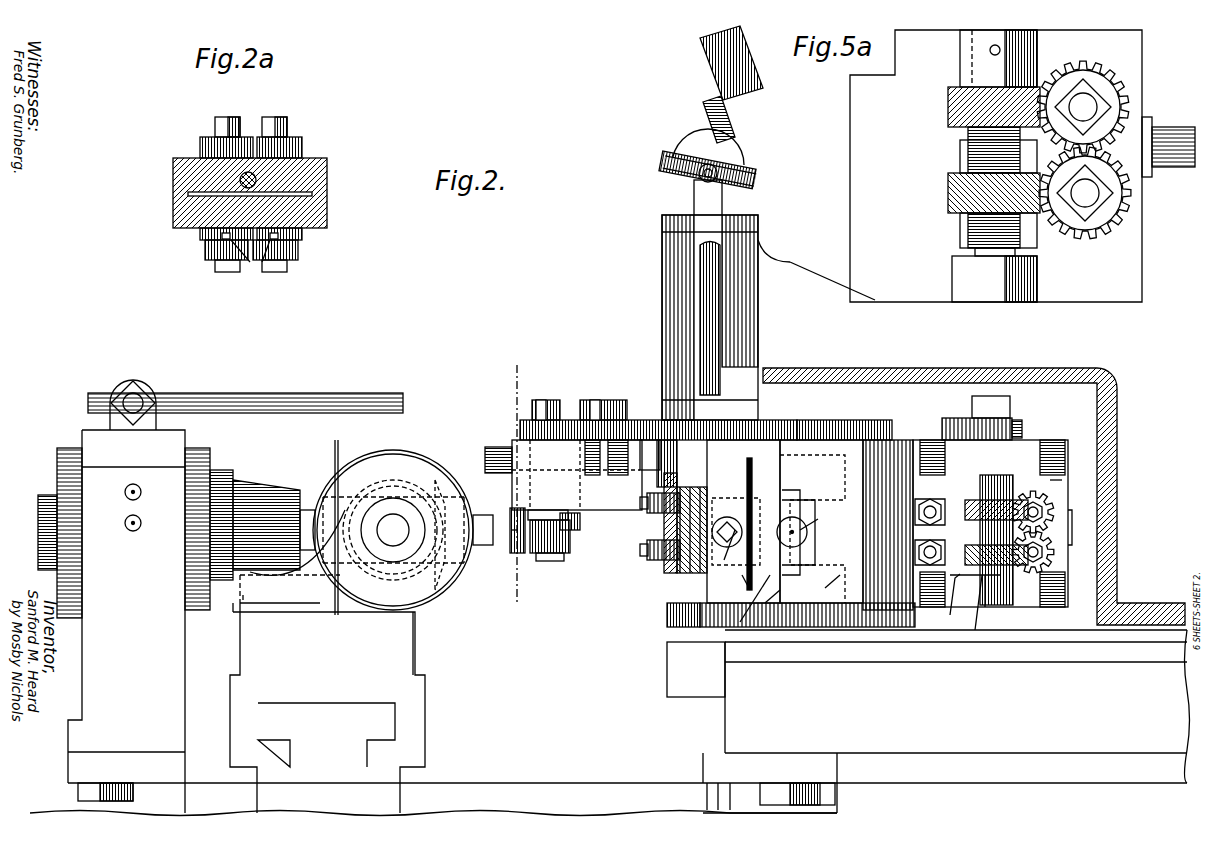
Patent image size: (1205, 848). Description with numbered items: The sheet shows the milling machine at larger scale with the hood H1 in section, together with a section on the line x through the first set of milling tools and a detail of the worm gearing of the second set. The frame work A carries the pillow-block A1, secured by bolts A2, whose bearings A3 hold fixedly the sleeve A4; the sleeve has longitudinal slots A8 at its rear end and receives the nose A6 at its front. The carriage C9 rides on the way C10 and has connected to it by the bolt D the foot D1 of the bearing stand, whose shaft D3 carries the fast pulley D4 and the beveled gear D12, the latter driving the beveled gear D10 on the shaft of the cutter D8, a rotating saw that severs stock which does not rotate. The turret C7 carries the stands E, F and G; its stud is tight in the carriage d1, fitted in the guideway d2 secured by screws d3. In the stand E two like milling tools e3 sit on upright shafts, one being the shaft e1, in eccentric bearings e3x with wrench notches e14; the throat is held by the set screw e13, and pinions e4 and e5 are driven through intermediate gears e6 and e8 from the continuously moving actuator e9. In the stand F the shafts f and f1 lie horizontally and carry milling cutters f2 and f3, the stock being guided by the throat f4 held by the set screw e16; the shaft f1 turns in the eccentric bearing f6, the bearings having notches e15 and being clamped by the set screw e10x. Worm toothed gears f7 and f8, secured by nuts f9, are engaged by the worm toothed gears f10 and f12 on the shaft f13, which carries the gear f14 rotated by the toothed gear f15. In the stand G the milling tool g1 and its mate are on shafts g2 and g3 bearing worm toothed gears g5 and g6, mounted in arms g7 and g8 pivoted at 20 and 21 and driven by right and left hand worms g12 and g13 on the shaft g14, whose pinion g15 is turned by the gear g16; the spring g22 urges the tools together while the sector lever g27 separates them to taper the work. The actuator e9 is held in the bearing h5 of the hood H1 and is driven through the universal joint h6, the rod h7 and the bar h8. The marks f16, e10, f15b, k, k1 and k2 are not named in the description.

In FIG. 2A, the stand E is at (322, 205).
In FIG. 2, the stand E is at (590, 510).
In FIG. 2A, the shaft f16 is at (256, 178).
In FIG. 2, the shaft f16 is at (492, 440).
In FIG. 2A, the pinion e5 is at (200, 146).
In FIG. 2A, the pinion e4 is at (302, 146).
In FIG. 2, the pinion e4 is at (532, 410).
In FIG. 2A, the eccentric bearings e3x is at (200, 236).
In FIG. 2, the eccentric bearings e3x is at (568, 515).
In FIG. 2A, the milling tools e3 is at (205, 252).
In FIG. 2, the milling tools e3 is at (570, 535).
In FIG. 2A, the notches e14 is at (245, 265).
In FIG. 2, the notches e14 is at (575, 495).
In FIG. 5A, the stand F is at (850, 157).
In FIG. 2, the stand F is at (876, 525).
In FIG. 5A, the worm toothed gear f10 is at (948, 105).
In FIG. 5A, the worm toothed gear f12 is at (948, 193).
In FIG. 2, the worm toothed gear f12 is at (740, 572).
In FIG. 5A, the worm toothed gear f7 is at (1108, 75).
In FIG. 2, the worm toothed gear f7 is at (677, 465).
In FIG. 5A, the shaft f1 is at (1088, 102).
In FIG. 2, the shaft f1 is at (752, 480).
In FIG. 5A, the nuts f9 is at (1097, 107).
In FIG. 2, the nuts f9 is at (655, 513).
In FIG. 5A, the worm toothed gear f8 is at (1118, 223).
In FIG. 2, the worm toothed gear f8 is at (660, 562).
In FIG. 5A, the shaft f is at (1092, 198).
In FIG. 2, the shaft f is at (676, 540).
In FIG. 5A, the set screw e10x is at (1168, 137).
In FIG. 2, the frame work A is at (185, 800).
In FIG. 2, the pillow-block A1 is at (123, 634).
In FIG. 2, the bolts A2 is at (130, 783).
In FIG. 2, the longitudinal slots A8 is at (60, 448).
In FIG. 2, the sleeve A4 is at (34, 532).
In FIG. 2, the bearings A3 is at (210, 452).
In FIG. 2, the nose A6 is at (285, 492).
In FIG. 2, the handle k is at (245, 393).
In FIG. 2, the pin k1 is at (128, 400).
In FIG. 2, the bracket k2 is at (143, 395).
In FIG. 2, the bolt D is at (270, 610).
In FIG. 2, the foot D1 is at (240, 615).
In FIG. 2, the way C10 is at (350, 738).
In FIG. 2, the carriage C9 is at (413, 640).
In FIG. 2, the shaft D3 is at (400, 540).
In FIG. 2, the beveled gear D10 is at (405, 522).
In FIG. 2, the cutter D8 is at (338, 455).
In FIG. 2, the fast pulley D4 is at (445, 560).
In FIG. 2, the beveled gear D12 is at (472, 560).
In FIG. 2, the section line x is at (514, 487).
In FIG. 2, the intermediate gear e8 is at (620, 428).
In FIG. 2, the intermediate gear e6 is at (600, 400).
In FIG. 2, the set screw e13 is at (540, 470).
In FIG. 2, the shaft e1 is at (520, 525).
In FIG. 2, the gear f14 is at (650, 455).
In FIG. 2, the shaft e10 is at (725, 517).
In FIG. 2, the notches e15 is at (726, 529).
In FIG. 2, the toothed gear f15 is at (752, 470).
In FIG. 2, the shaft f13 is at (768, 595).
In FIG. 2, the eccentric bearing f6 is at (746, 606).
In FIG. 2, the milling cutter f2 is at (815, 492).
In FIG. 2, the milling cutter f3 is at (824, 587).
In FIG. 2, the throat f4 is at (805, 525).
In FIG. 2, the turret C7 is at (821, 521).
In FIG. 2, the set screw e16 is at (700, 610).
In FIG. 2, the toothed wheel e9 is at (820, 420).
In FIG. 2, the plate f15b is at (795, 422).
In FIG. 2, the bearing h5 is at (662, 318).
In FIG. 2, the universal joint h6 is at (699, 172).
In FIG. 2, the rod h7 is at (708, 118).
In FIG. 2, the bar h8 is at (705, 58).
In FIG. 2, the hood H1 is at (832, 299).
In FIG. 2, the stand G is at (974, 496).
In FIG. 2, the pinion g15 is at (1060, 378).
In FIG. 2, the sector lever g27 is at (1000, 405).
In FIG. 2, the gear g16 is at (942, 425).
In FIG. 2, the spring g22 is at (1022, 425).
In FIG. 2, the arm g7 is at (935, 470).
In FIG. 2, the right hand worm g12 is at (1000, 510).
In FIG. 2, the worm toothed gear g5 is at (1062, 480).
In FIG. 2, the pivot 20 is at (925, 512).
In FIG. 2, the pivot 21 is at (930, 582).
In FIG. 2, the shaft g2 is at (1050, 508).
In FIG. 2, the shaft g3 is at (1052, 540).
In FIG. 2, the milling tool g1 is at (1052, 556).
In FIG. 2, the worm toothed gear g6 is at (1054, 552).
In FIG. 2, the left hand worm g13 is at (998, 590).
In FIG. 2, the arm g8 is at (950, 615).
In FIG. 2, the shaft g14 is at (975, 630).
In FIG. 2, the carriage d1 is at (667, 672).
In FIG. 2, the guideway d2 is at (730, 680).
In FIG. 2, the screws d3 is at (787, 795).